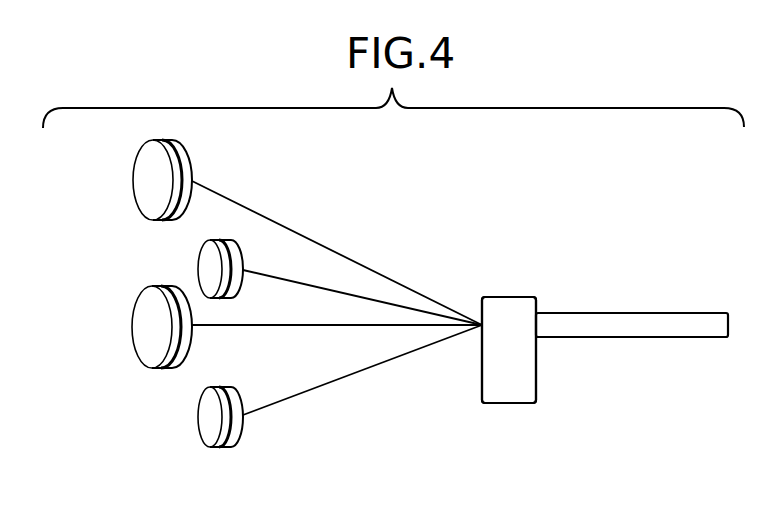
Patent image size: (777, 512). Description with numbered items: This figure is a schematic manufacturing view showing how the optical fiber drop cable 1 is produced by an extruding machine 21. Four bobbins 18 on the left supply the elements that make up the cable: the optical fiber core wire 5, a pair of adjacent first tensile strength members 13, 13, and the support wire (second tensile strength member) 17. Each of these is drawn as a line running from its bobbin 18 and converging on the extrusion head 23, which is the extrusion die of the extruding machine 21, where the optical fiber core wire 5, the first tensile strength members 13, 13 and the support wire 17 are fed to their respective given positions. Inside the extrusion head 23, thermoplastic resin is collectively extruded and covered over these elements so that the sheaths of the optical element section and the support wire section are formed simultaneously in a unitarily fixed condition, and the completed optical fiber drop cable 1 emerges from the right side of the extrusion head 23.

The optical fiber drop cable 1 is at (602, 313).
The optical fiber core wire 5 is at (262, 327).
The first tensile strength members 13 is at (256, 273).
The support wire (second tensile strength member) 17 is at (322, 246).
The bobbins 18 is at (133, 181).
The extruding machine 21 is at (508, 404).
The extrusion head 23 is at (512, 303).